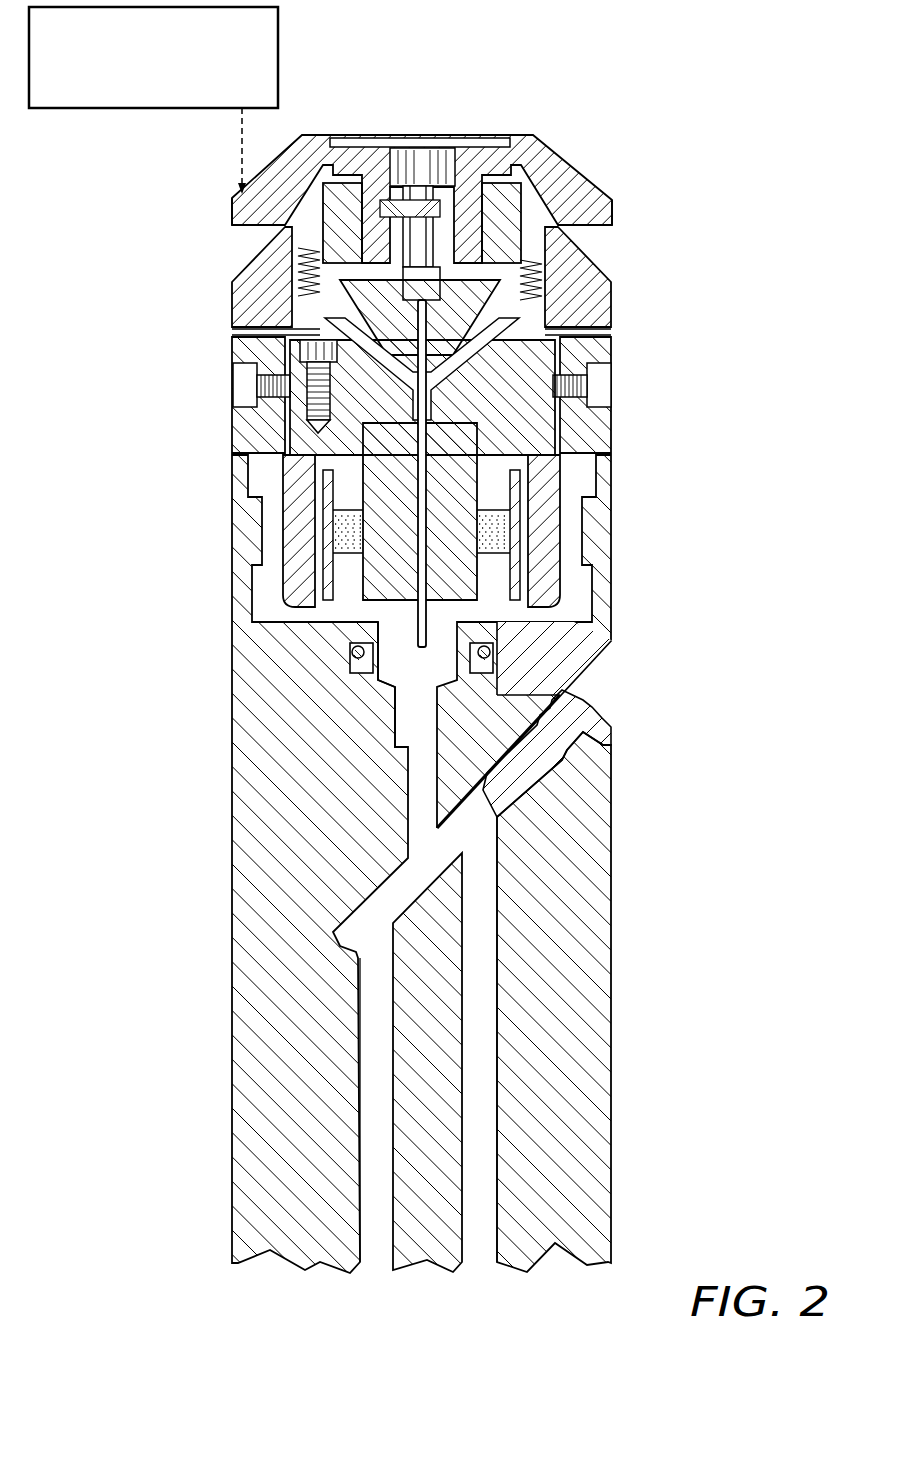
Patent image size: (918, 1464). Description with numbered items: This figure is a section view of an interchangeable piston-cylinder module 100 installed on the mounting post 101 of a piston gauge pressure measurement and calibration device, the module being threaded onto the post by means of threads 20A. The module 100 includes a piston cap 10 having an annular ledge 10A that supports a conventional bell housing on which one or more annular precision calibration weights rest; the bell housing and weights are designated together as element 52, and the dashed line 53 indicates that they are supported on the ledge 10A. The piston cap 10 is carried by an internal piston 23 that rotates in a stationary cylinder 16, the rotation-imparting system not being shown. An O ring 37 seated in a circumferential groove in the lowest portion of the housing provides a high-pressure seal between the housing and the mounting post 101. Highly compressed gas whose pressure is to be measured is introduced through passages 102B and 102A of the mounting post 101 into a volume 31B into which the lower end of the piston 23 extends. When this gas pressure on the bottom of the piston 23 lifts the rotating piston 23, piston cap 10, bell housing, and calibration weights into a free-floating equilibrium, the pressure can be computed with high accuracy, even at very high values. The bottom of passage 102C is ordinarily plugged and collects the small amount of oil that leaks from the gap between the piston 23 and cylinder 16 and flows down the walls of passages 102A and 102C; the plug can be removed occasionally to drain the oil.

The piston cap 10 is at (562, 155).
The annular ledge 10A is at (237, 194).
The stationary cylinder 16 is at (480, 496).
The threads 20A is at (582, 532).
The internal piston 23 is at (422, 650).
The volume 31B is at (395, 648).
The O ring 37 is at (570, 653).
The bell housing and annular calibration weights 52 is at (279, 88).
The dashed line 53 is at (243, 152).
The interchangeable piston-cylinder module 100 is at (491, 426).
The mounting post 101 is at (196, 455).
The passage 102A is at (430, 781).
The passage 102B is at (482, 1240).
The passage 102C is at (372, 1240).